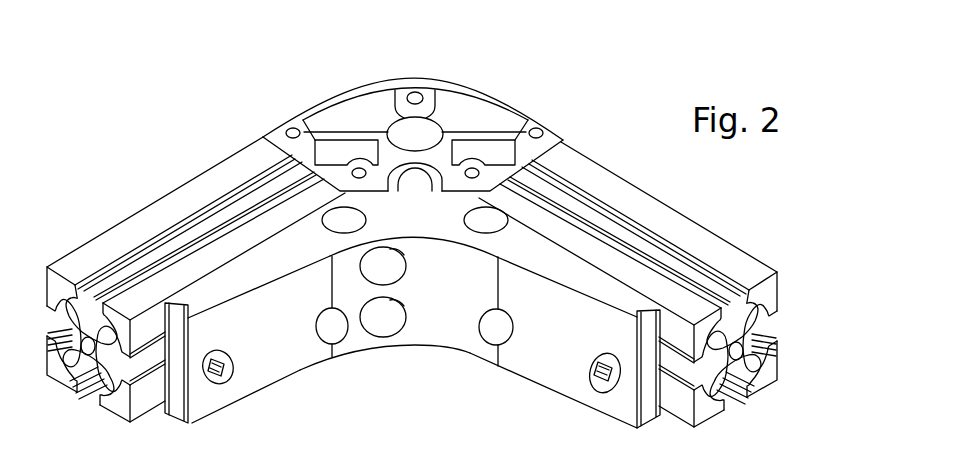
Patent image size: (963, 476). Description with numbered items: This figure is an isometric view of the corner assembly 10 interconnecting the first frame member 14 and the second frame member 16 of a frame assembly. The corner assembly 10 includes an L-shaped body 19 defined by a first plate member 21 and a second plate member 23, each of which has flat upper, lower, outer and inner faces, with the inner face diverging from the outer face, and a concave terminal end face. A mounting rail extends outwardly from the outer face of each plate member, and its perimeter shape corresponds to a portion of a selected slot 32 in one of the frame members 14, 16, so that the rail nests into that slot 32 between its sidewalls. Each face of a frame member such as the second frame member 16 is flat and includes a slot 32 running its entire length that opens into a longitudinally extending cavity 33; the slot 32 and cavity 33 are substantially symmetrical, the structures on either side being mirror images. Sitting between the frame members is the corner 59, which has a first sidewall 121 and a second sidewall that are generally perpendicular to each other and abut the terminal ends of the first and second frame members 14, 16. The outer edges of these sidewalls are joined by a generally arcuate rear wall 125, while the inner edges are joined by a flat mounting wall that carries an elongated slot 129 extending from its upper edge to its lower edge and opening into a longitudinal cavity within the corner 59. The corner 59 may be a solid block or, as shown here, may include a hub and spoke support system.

The corner assembly 10 is at (455, 332).
The first frame member 14 is at (196, 278).
The second frame member 16 is at (628, 284).
The L-shaped body 19 is at (248, 404).
The first plate member 21 is at (234, 256).
The second plate member 23 is at (562, 258).
The slot 32 is at (144, 384).
The cavity 33 is at (96, 388).
The corner 59 is at (388, 124).
The first sidewall 121 is at (298, 148).
The arcuate rear wall 125 is at (337, 92).
The elongated slot 129 is at (423, 185).